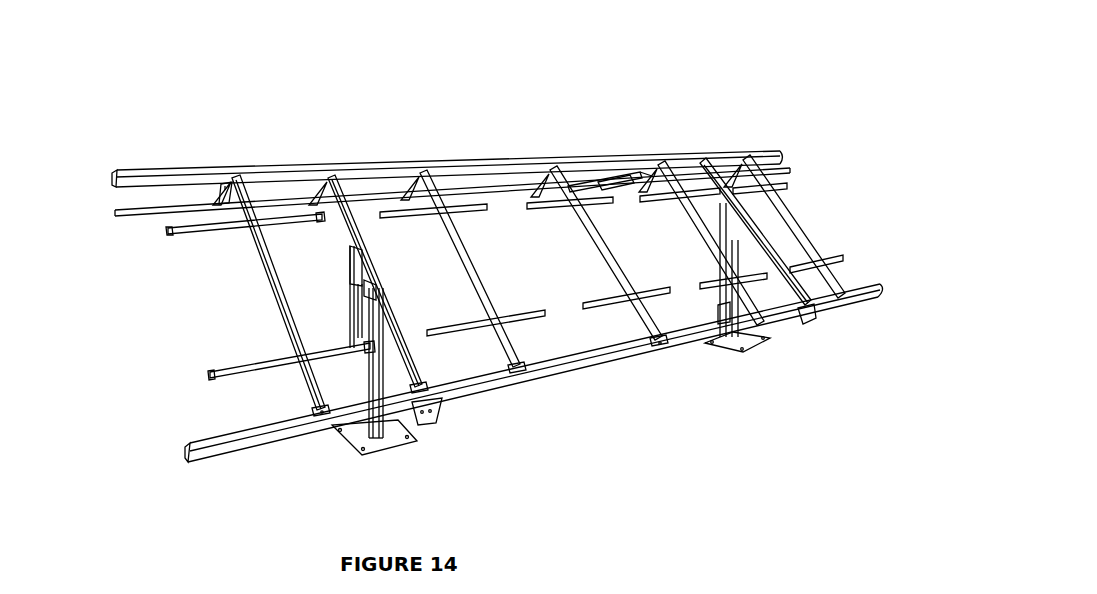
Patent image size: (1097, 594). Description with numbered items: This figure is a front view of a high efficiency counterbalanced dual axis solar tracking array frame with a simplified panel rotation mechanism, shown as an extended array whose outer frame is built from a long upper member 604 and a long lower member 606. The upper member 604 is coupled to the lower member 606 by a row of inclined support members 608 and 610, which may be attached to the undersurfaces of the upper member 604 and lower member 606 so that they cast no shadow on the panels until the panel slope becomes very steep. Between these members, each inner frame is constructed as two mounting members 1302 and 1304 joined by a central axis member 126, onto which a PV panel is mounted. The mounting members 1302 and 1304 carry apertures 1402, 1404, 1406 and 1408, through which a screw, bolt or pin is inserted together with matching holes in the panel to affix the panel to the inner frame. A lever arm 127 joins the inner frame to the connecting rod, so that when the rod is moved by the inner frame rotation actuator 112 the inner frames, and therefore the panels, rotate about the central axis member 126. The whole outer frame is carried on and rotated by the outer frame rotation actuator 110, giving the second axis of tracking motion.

The outer frame rotation actuator 110 is at (350, 398).
The inner frame rotation actuator 112 is at (626, 166).
The central axis member 126 is at (252, 298).
The lever arm 127 is at (221, 180).
The upper member 604 is at (262, 159).
The lower member 606 is at (499, 394).
The support member 608 is at (362, 206).
The support member 610 is at (750, 212).
The mounting member 1302 is at (266, 371).
The mounting member 1304 is at (223, 236).
The aperture 1402 is at (201, 384).
The aperture 1404 is at (164, 242).
The aperture 1406 is at (307, 227).
The aperture 1408 is at (355, 360).